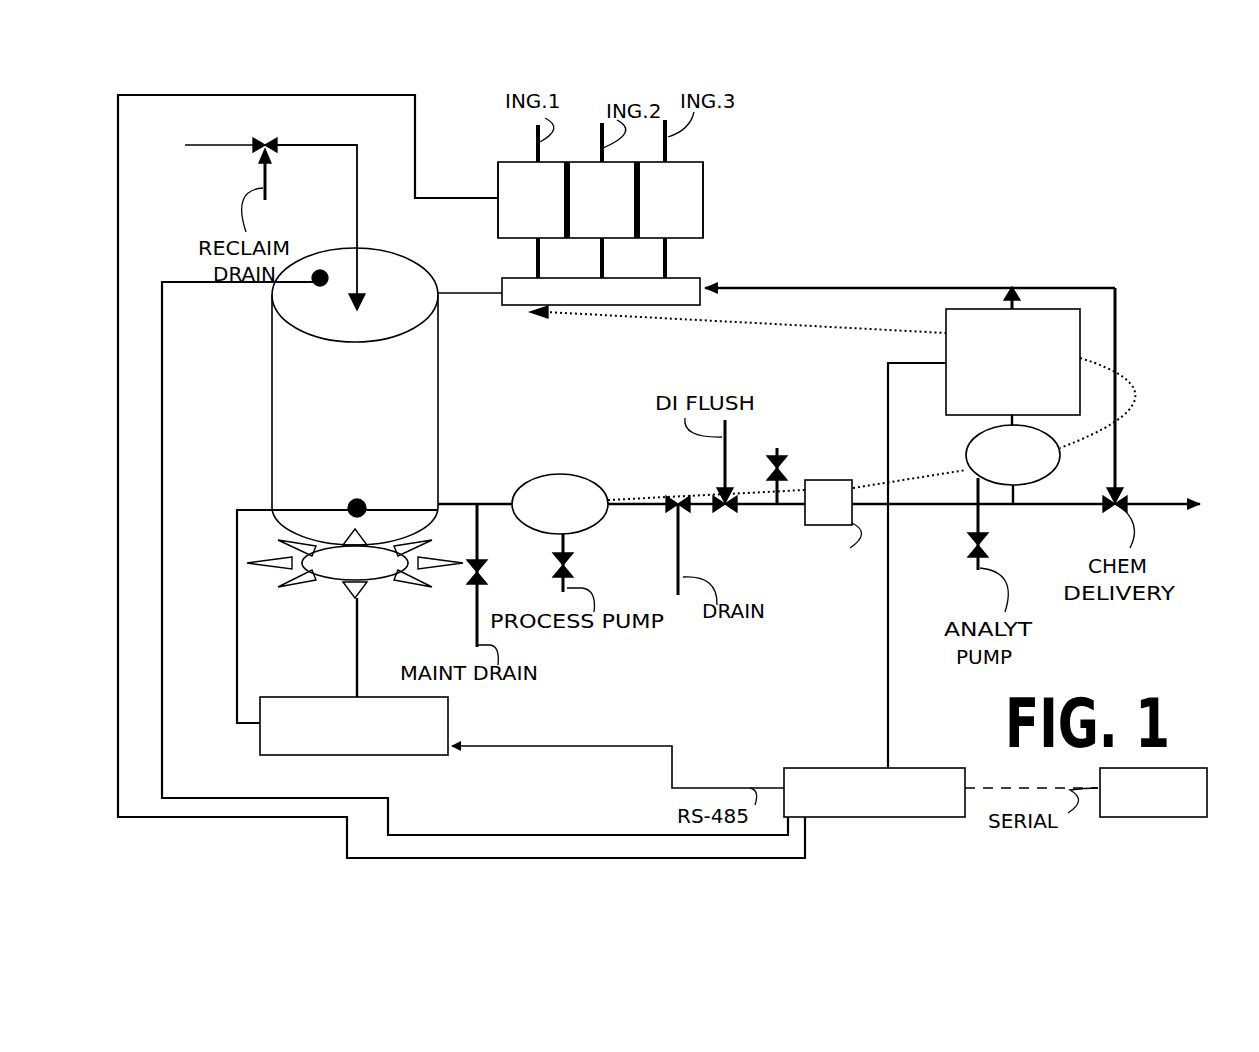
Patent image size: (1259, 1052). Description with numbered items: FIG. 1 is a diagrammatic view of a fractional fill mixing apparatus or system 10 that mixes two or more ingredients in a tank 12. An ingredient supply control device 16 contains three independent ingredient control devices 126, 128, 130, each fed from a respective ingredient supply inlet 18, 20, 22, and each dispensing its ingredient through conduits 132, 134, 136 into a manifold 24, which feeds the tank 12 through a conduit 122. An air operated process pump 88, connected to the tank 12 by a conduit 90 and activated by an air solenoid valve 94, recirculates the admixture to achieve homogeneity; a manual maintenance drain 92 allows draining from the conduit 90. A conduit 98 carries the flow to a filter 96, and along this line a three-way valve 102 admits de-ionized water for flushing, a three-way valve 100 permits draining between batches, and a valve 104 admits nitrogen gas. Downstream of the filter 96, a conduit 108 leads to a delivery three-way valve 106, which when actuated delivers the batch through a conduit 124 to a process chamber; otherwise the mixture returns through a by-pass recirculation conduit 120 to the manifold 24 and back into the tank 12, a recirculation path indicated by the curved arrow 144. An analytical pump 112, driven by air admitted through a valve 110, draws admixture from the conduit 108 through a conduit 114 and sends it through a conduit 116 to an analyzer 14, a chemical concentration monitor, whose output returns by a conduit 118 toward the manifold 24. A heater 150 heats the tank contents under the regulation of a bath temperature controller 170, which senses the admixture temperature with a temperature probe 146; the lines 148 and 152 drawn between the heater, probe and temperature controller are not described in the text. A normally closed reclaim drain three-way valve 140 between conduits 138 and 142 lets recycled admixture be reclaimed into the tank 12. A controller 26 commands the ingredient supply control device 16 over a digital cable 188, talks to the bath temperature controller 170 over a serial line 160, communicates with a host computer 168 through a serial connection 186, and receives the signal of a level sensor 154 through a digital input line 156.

The fractional fill mixing apparatus 10 is at (282, 858).
The tank 12 is at (440, 400).
The analyzer 14 is at (946, 389).
The ingredient supply control device 16 is at (738, 200).
The first ingredient supply inlet 18 is at (536, 130).
The second ingredient supply inlet 20 is at (600, 150).
The third ingredient supply inlet 22 is at (668, 150).
The manifold 24 is at (690, 278).
The controller 26 is at (925, 818).
The process pump 88 is at (585, 479).
The conduit 90 is at (467, 504).
The maintenance drain 92 is at (484, 574).
The solenoid valve 94 is at (572, 572).
The filter 96 is at (838, 481).
The conduit 98 is at (760, 505).
The three-way valve 100 is at (677, 496).
The air operated three-way valve 102 is at (731, 497).
The valve 104 is at (785, 470).
The three-way delivery valve 106 is at (1126, 506).
The conduit 108 is at (933, 505).
The valve 110 is at (972, 553).
The analytical pump 112 is at (1032, 473).
The conduit 114 is at (1013, 505).
The conduit 116 is at (1017, 418).
The conduit 118 is at (1020, 298).
The by-pass re-circulation conduit 120 is at (1100, 288).
The conduit 122 is at (463, 292).
The conduit 124 is at (1173, 497).
The first ingredient control device 126 is at (526, 200).
The second ingredient control device 128 is at (602, 200).
The third ingredient control device 130 is at (677, 200).
The conduit 132 is at (536, 258).
The conduit 134 is at (601, 273).
The conduit 136 is at (665, 270).
The conduit 138 is at (210, 147).
The reclaim drain three-way valve 140 is at (276, 152).
The conduit 142 is at (358, 146).
The curved arrow 144 is at (620, 316).
The temperature probe 146 is at (362, 500).
The sensor line to temperature controller 148 is at (237, 590).
The heater 150 is at (338, 583).
The heater connection 152 is at (360, 662).
The level sensor 154 is at (321, 287).
The digital input line 156 is at (165, 418).
The serial communications line 160 is at (536, 748).
The host computer 168 is at (1132, 818).
The bath temperature controller 170 is at (400, 757).
The serial connection 186 is at (1000, 787).
The cable 188 is at (522, 858).